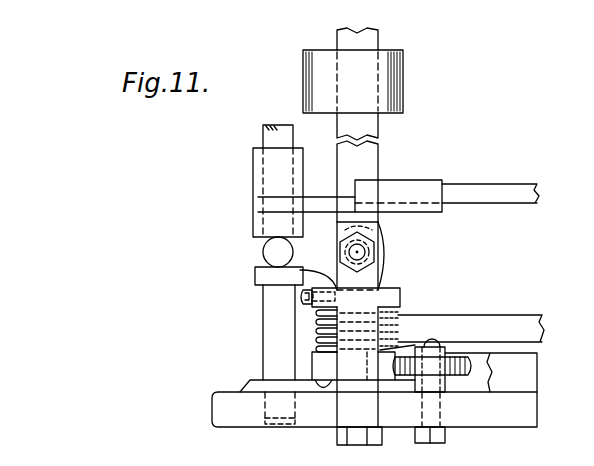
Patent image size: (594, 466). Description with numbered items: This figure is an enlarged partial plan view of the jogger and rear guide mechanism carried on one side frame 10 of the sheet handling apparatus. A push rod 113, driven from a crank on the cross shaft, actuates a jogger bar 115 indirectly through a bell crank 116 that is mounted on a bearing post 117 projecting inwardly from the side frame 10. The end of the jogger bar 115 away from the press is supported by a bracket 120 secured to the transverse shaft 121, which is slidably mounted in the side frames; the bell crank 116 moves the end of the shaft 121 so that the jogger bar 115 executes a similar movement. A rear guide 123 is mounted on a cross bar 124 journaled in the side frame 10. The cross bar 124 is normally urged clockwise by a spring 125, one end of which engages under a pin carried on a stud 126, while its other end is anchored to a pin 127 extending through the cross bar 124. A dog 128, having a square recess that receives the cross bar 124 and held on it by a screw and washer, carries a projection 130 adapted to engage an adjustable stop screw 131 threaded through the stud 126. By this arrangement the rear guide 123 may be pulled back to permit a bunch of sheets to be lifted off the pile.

The side frame 10 is at (523, 407).
The push rod 113 is at (505, 320).
The jogger bar 115 is at (485, 185).
The bell crank 116 is at (382, 255).
The bearing post 117 is at (378, 227).
The bracket 120 is at (312, 207).
The transverse shaft 121 is at (278, 135).
The rear guide 123 is at (403, 76).
The cross bar 124 is at (370, 125).
The spring 125 is at (405, 320).
The stud 126 is at (442, 383).
The pin 127 is at (393, 288).
The dog 128 is at (323, 364).
The projection 130 is at (393, 375).
The adjustable stop screw 131 is at (465, 364).